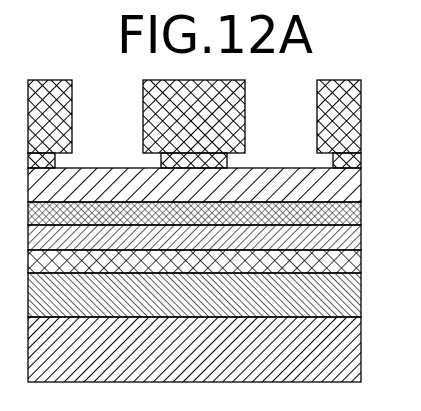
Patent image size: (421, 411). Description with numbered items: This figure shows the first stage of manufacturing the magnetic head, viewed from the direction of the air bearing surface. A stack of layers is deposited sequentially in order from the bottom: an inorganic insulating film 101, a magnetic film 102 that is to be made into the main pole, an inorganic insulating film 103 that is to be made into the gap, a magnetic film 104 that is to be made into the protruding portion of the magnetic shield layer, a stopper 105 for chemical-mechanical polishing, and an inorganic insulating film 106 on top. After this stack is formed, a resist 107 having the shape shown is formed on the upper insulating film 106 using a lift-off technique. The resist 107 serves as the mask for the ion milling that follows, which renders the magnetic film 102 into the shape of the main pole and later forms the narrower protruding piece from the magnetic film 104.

The inorganic insulating film 101 is at (194, 349).
The magnetic film 102 is at (194, 295).
The inorganic insulating film 103 is at (194, 262).
The magnetic film 104 is at (194, 238).
The stopper 105 is at (194, 213).
The inorganic insulating film 106 is at (194, 185).
The resist 107 is at (194, 124).